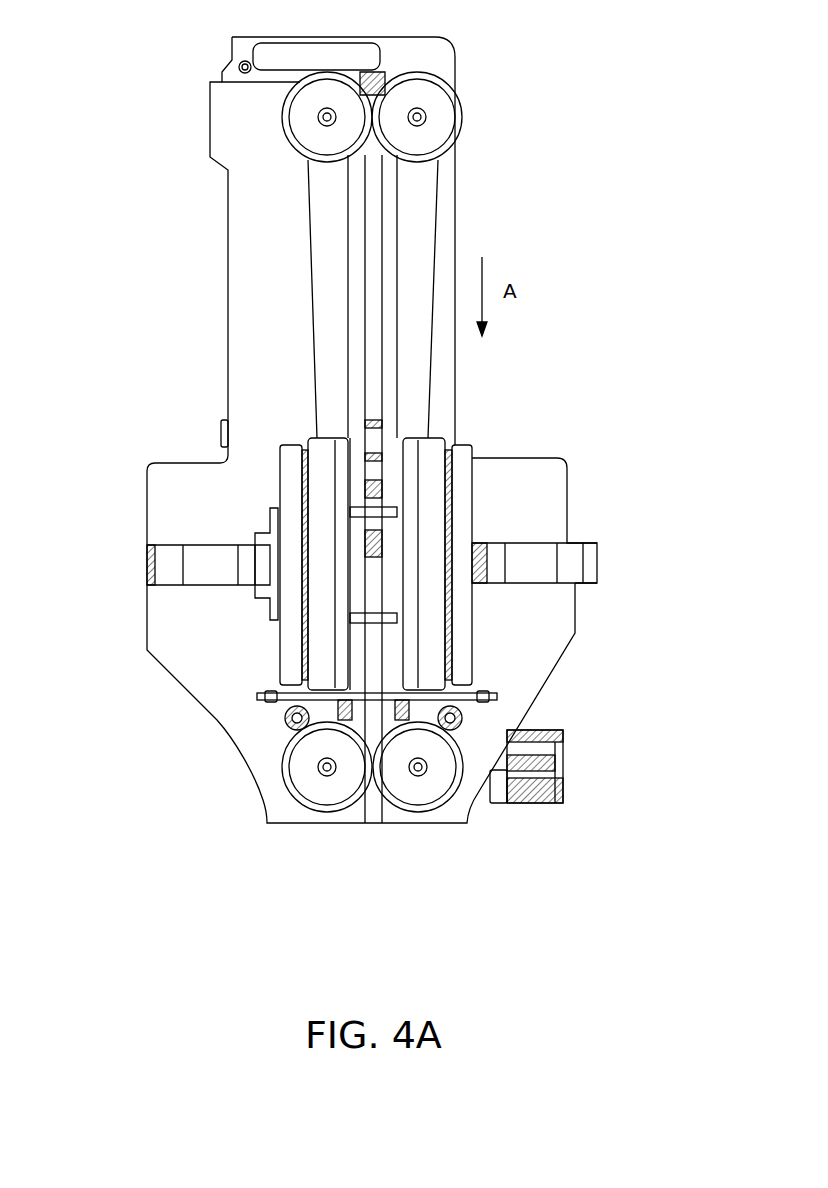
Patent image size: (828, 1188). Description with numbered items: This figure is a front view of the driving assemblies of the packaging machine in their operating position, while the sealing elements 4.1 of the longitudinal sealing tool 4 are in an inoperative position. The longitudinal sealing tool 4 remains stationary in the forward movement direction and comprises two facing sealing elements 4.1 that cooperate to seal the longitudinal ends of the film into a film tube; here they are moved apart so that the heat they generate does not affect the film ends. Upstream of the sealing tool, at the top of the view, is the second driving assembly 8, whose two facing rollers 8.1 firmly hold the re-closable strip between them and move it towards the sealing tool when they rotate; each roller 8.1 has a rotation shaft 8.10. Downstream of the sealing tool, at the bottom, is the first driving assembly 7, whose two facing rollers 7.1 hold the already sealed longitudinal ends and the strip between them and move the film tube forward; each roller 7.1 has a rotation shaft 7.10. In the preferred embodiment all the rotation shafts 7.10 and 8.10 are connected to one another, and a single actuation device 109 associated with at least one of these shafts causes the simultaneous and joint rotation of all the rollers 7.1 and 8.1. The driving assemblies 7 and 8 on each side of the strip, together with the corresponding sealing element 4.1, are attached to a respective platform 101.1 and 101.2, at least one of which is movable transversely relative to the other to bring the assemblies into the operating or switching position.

The second driving assembly 8 is at (342, 234).
The rollers 8.1 is at (303, 102).
The rotation shaft 8.10 is at (320, 117).
The platform 101.1 is at (263, 293).
The longitudinal sealing tool 4 is at (391, 536).
The sealing elements 4.1 is at (327, 460).
The platform 101.2 is at (540, 640).
The first driving assembly 7 is at (355, 803).
The rollers 7.1 is at (302, 785).
The rotation shaft 7.10 is at (325, 778).
The actuation device 109 is at (540, 773).